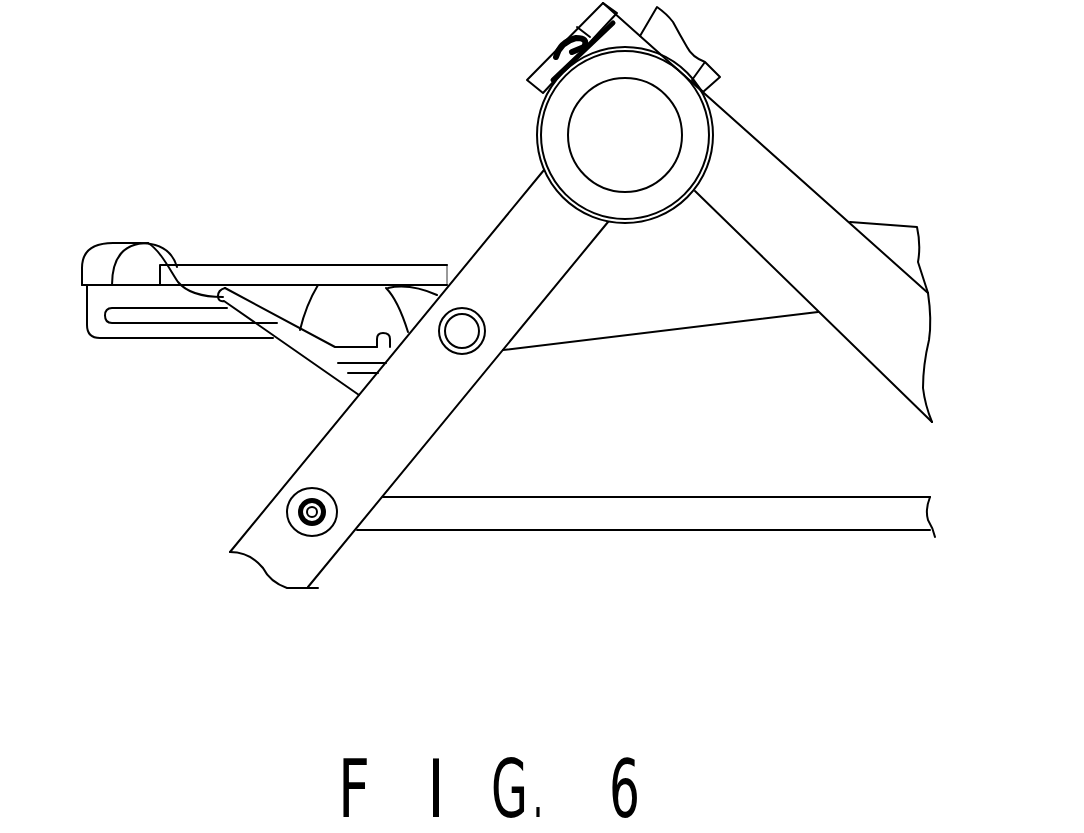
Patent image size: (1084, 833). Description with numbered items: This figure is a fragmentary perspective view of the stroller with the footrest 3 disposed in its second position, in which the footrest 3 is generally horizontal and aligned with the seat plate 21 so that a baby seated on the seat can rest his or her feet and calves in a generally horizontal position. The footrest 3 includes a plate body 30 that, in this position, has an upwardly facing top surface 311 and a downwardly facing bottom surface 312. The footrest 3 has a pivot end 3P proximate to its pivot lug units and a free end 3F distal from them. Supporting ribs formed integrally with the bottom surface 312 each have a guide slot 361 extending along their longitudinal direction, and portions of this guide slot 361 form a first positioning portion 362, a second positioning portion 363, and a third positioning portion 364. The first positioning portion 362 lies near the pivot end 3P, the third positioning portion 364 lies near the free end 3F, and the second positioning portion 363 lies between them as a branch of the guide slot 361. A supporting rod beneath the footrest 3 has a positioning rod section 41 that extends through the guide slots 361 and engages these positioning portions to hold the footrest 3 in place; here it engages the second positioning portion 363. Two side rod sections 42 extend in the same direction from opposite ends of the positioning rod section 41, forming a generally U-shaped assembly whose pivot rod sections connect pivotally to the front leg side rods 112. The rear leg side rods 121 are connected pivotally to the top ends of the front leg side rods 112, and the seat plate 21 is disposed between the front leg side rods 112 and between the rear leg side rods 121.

The footrest 3 is at (361, 254).
The free end 3F is at (98, 268).
The pivot end 3P is at (450, 278).
The plate body 30 is at (422, 277).
The top surface 311 is at (243, 262).
The bottom surface 312 is at (199, 348).
The guide slot 361 is at (317, 265).
The first positioning portion 362 is at (377, 333).
The second positioning portion 363 is at (220, 292).
The third positioning portion 364 is at (113, 315).
The positioning rod section 41 is at (148, 244).
The side rod sections 42 is at (302, 352).
The front leg side rods 112 is at (373, 465).
The rear leg side rods 121 is at (779, 222).
The seat plate 21 is at (652, 317).